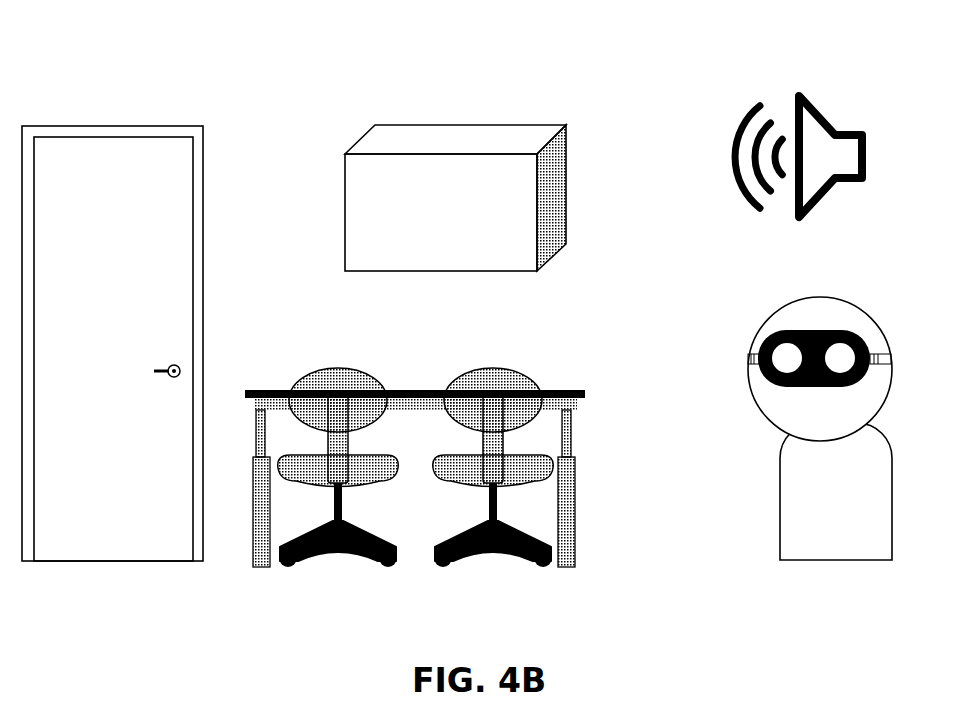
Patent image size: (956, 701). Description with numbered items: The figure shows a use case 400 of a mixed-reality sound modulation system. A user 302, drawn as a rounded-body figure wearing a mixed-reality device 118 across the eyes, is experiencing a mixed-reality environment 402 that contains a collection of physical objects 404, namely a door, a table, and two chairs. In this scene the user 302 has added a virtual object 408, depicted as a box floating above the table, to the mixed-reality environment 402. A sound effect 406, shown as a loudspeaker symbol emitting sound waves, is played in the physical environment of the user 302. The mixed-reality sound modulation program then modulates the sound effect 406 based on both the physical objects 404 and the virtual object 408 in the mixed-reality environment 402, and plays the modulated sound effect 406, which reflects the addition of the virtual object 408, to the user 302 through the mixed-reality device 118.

The use case 400 is at (187, 82).
The mixed-reality environment 402 is at (776, 462).
The physical objects 404 is at (462, 373).
The sound effect 406 is at (798, 176).
The virtual object 408 is at (566, 188).
The mixed-reality device 118 is at (768, 340).
The user 302 is at (780, 472).